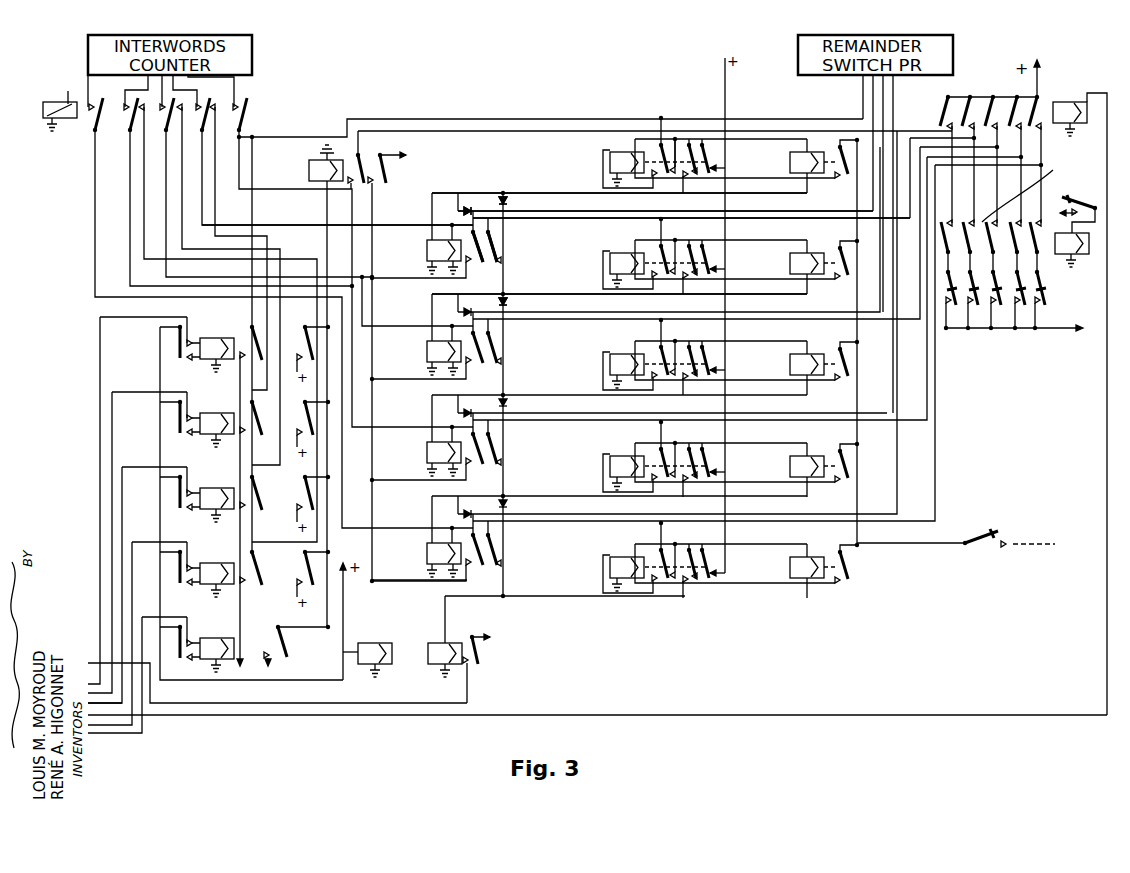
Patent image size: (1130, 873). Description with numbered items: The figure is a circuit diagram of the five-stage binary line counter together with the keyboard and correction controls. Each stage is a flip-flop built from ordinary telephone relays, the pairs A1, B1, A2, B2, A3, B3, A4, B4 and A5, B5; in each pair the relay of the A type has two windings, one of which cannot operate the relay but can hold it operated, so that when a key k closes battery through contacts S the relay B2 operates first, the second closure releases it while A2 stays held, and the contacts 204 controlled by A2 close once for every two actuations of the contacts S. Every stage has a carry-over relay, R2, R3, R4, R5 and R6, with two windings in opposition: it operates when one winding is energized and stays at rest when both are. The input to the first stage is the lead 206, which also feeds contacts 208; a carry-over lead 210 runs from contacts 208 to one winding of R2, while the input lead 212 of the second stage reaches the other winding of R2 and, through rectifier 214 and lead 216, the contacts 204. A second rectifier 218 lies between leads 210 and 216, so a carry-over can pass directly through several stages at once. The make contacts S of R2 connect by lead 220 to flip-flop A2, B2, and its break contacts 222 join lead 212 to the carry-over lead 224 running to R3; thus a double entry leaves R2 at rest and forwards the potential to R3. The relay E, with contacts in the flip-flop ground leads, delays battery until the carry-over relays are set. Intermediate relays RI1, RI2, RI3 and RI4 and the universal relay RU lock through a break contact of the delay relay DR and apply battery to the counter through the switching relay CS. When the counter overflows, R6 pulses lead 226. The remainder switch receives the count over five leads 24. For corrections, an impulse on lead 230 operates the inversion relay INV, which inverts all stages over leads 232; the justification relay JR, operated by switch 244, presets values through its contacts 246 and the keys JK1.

The lead 206 is at (535, 131).
The carry-over lead 210 is at (576, 192).
The input lead 212 is at (410, 226).
The rectifier 214 is at (458, 199).
The lead 216 is at (566, 212).
The second rectifier 218 is at (507, 203).
The lead 220 is at (691, 230).
The break contacts 222 is at (497, 257).
The carry-over lead 224 is at (519, 294).
The contacts 204 is at (718, 292).
The contacts 208 is at (713, 190).
The leads 24 is at (900, 96).
The leads 232 is at (955, 170).
The contacts 246 is at (1032, 190).
The switch 244 is at (1085, 205).
The lead 226 is at (440, 706).
The lead 230 is at (705, 716).
The switching relay CS is at (48, 111).
The relay E is at (360, 167).
The carry-over relay R2 is at (640, 235).
The carry-over relay R3 is at (645, 264).
The carry-over relay R4 is at (648, 319).
The carry-over relay R5 is at (652, 357).
The carry-over relay R6 is at (465, 649).
The relay A1 is at (708, 154).
The relay A2 is at (708, 255).
The relay A3 is at (708, 356).
The relay A4 is at (708, 458).
The relay A5 is at (708, 559).
The relay B1 is at (812, 165).
The relay B2 is at (812, 266).
The relay B3 is at (812, 367).
The relay B4 is at (812, 469).
The relay B5 is at (812, 570).
The intermediate relay RI1 is at (197, 344).
The intermediate relay RI2 is at (197, 419).
The intermediate relay RI3 is at (197, 494).
The intermediate relay RI4 is at (197, 569).
The relay RU is at (245, 647).
The delay relay DR is at (367, 650).
The inversion relay INV is at (1080, 397).
The justification relay JR is at (1076, 255).
The manually operated keys JK1 is at (1047, 300).
The key k is at (976, 533).
The make contacts S is at (482, 260).